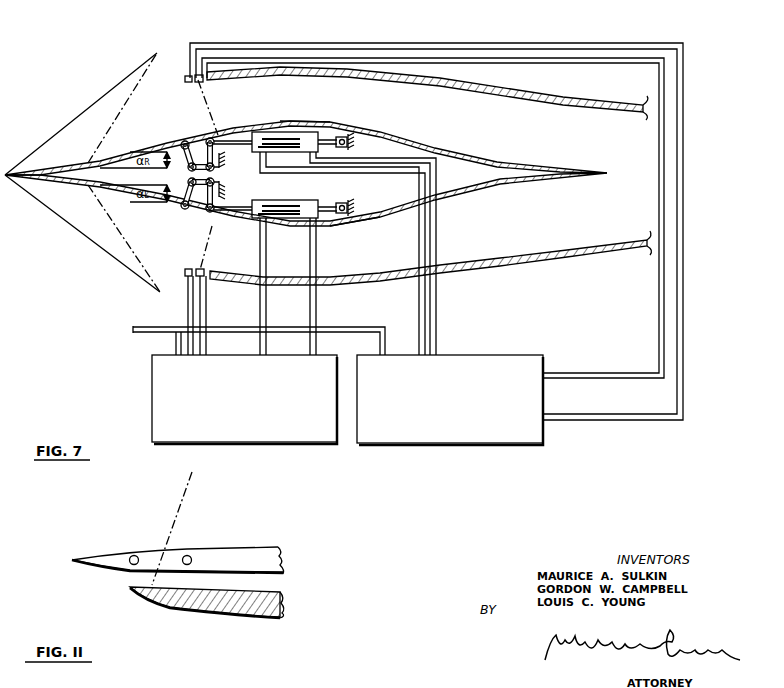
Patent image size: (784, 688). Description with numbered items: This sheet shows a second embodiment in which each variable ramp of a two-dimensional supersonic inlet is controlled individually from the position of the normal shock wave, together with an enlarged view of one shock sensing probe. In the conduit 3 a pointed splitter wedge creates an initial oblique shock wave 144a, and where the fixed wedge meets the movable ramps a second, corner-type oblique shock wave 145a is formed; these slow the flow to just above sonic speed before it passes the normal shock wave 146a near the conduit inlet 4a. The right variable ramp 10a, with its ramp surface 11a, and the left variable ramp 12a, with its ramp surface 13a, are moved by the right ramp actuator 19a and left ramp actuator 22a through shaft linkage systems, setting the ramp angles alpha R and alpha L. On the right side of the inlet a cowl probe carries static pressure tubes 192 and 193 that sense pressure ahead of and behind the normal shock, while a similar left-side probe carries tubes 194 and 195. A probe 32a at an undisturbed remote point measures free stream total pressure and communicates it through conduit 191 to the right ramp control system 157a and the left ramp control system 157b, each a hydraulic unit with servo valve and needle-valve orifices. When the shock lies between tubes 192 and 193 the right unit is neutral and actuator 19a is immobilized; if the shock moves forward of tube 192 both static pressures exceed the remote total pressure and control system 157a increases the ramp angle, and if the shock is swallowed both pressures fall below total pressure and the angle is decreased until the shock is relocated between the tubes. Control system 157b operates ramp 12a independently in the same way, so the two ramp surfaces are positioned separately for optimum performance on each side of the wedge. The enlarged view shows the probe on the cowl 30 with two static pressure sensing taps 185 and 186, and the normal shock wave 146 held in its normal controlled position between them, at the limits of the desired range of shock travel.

In FIG. 7, the static pressure tube 192 is at (243, 50).
In FIG. 7, the static pressure tube 193 is at (558, 60).
In FIG. 7, the conduit 3 is at (507, 262).
In FIG. 11, the conduit 3 is at (260, 612).
In FIG. 7, the right variable ramp 10a is at (152, 153).
In FIG. 7, the left variable ramp 12a is at (120, 195).
In FIG. 7, the initial oblique shock wave 144a is at (73, 106).
In FIG. 7, the second oblique shock wave 145a is at (107, 132).
In FIG. 7, the normal shock wave 146a is at (200, 93).
In FIG. 7, the conduit inlet 4a is at (197, 105).
In FIG. 7, the right ramp surface 11a is at (287, 120).
In FIG. 7, the left ramp surface 13a is at (332, 227).
In FIG. 7, the right ramp actuator 19a is at (313, 138).
In FIG. 7, the left ramp actuator 22a is at (282, 205).
In FIG. 7, the static pressure tube 194 is at (188, 307).
In FIG. 7, the static pressure tube 195 is at (206, 312).
In FIG. 7, the conduit 191 is at (323, 326).
In FIG. 7, the probe 32a is at (133, 331).
In FIG. 7, the left ramp control system 157b is at (162, 387).
In FIG. 7, the right ramp control system 157a is at (532, 388).
In FIG. 11, the cowl 30 is at (98, 560).
In FIG. 11, the static pressure sensing tap 185 is at (133, 555).
In FIG. 11, the static pressure sensing tap 186 is at (193, 557).
In FIG. 11, the normal shock wave 146 is at (180, 503).